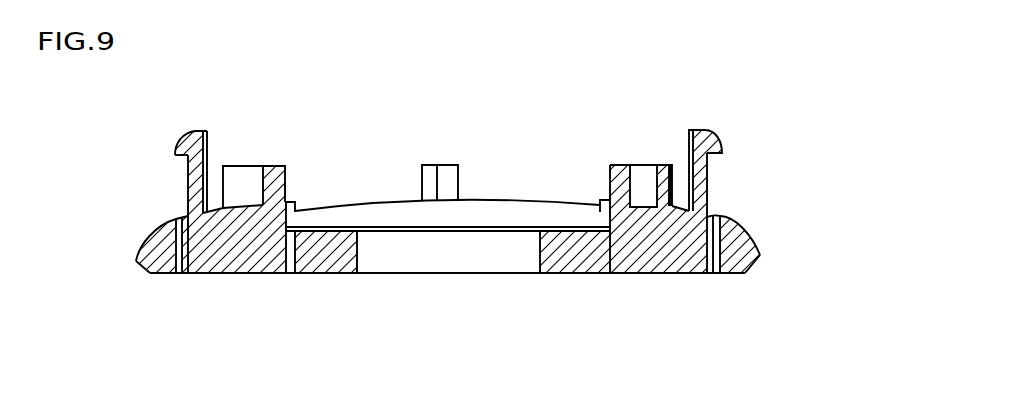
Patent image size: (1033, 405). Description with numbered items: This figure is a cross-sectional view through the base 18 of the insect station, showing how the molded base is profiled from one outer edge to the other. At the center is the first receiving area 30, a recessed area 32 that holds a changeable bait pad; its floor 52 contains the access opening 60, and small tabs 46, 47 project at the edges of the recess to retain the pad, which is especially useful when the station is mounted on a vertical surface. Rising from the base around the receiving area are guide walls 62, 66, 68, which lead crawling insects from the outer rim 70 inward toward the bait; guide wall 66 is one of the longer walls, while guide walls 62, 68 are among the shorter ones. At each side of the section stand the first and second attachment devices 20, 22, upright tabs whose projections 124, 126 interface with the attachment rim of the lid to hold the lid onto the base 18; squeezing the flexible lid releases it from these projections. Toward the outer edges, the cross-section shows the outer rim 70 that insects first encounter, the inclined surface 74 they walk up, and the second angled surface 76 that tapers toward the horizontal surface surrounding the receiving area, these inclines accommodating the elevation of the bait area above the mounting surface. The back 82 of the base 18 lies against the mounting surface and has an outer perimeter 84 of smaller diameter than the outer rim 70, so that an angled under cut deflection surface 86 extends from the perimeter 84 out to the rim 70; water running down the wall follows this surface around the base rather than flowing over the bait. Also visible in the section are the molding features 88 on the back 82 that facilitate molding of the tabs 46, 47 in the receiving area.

The base 18 is at (760, 89).
The first attachment device 20 is at (708, 128).
The second attachment device 22 is at (183, 138).
The first receiving area 30 is at (308, 210).
The recessed area 32 is at (345, 217).
The tab 46 is at (290, 204).
The tab 47 is at (602, 200).
The floor 52 is at (517, 212).
The access opening 60 is at (357, 252).
The guide wall 62 is at (243, 165).
The guide wall 66 is at (447, 163).
The guide wall 68 is at (642, 167).
The outer rim 70 is at (762, 255).
The inclined surface 74 is at (742, 232).
The second angled surface 76 is at (712, 215).
The back 82 is at (202, 277).
The outer perimeter 84 is at (745, 273).
The under cut deflection surface 86 is at (143, 263).
The molding features 88 is at (290, 257).
The projection 124 is at (712, 155).
The projection 126 is at (182, 155).